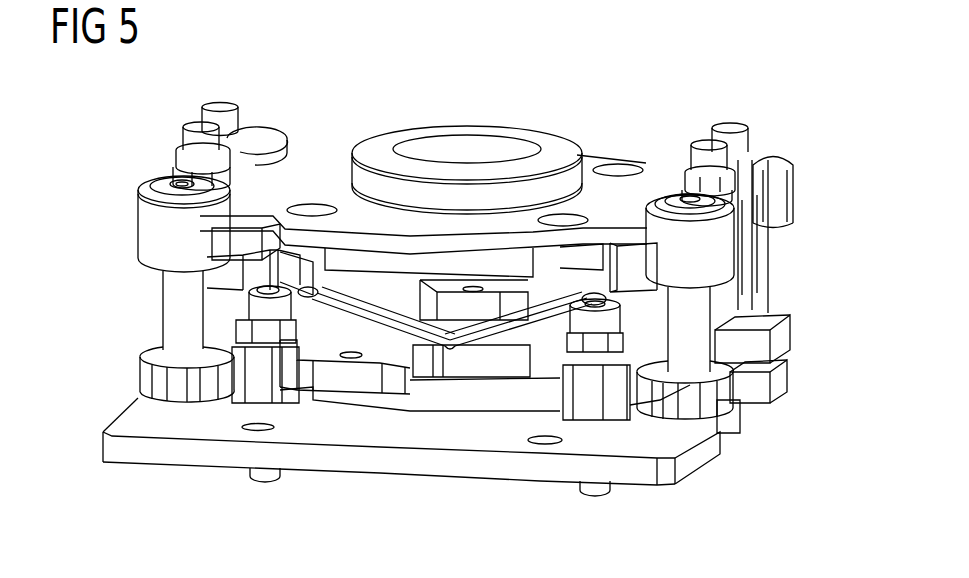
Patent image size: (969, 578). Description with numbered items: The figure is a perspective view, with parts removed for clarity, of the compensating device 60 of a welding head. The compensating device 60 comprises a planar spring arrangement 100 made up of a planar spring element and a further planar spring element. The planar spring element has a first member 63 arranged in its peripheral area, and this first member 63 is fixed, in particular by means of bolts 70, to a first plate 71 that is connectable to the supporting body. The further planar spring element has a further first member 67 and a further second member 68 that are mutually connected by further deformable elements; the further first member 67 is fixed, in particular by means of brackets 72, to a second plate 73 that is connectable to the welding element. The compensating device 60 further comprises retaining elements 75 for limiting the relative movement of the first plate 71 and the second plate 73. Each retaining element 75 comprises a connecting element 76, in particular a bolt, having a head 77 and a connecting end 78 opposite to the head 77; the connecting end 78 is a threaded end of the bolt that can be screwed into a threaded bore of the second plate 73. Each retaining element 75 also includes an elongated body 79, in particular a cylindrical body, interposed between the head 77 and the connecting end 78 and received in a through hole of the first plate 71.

The planar spring arrangement 100 is at (121, 288).
The compensating device 60 is at (469, 97).
The first plate 71 is at (597, 156).
The head 77 is at (675, 197).
The elongated body 79 is at (692, 370).
The first member 63 is at (753, 260).
The bolts 70 is at (763, 292).
The further second member 68 is at (402, 305).
The brackets 72 is at (307, 333).
The further first member 67 is at (363, 377).
The second plate 73 is at (648, 475).
The connecting end 78 is at (727, 442).
The retaining elements 75 is at (787, 397).
The connecting element 76 is at (723, 350).